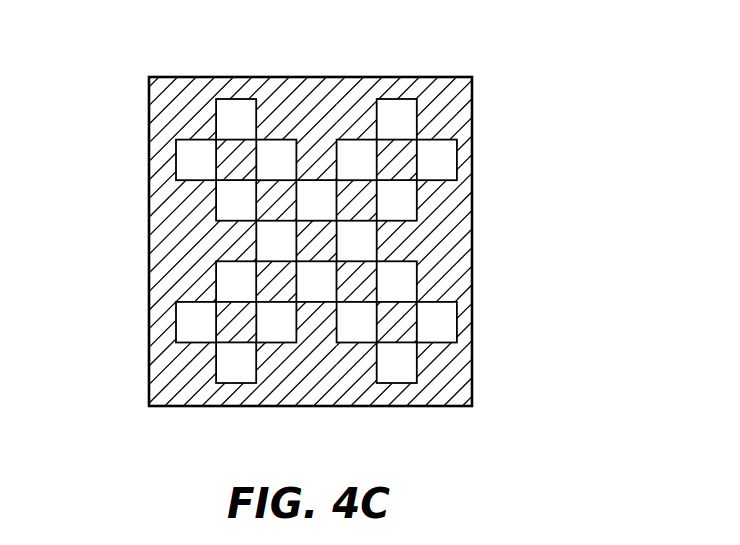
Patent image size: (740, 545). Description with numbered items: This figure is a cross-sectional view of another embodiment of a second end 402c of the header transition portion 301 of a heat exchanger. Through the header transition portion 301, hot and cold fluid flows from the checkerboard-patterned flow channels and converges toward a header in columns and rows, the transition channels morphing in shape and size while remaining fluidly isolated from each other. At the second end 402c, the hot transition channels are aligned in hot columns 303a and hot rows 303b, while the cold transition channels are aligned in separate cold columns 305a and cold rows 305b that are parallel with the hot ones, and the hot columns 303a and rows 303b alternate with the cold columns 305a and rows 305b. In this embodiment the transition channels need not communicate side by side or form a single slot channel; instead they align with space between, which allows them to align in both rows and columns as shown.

The second end 402c is at (342, 231).
The header transition portion 301 is at (318, 106).
The cold columns 305a is at (480, 162).
The hot columns 303a is at (446, 200).
The cold rows 305b is at (317, 338).
The hot rows 303b is at (367, 366).